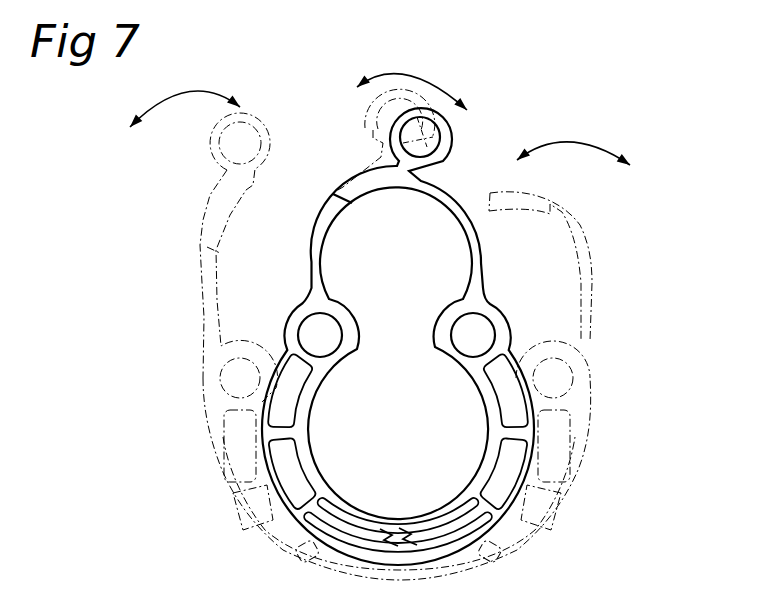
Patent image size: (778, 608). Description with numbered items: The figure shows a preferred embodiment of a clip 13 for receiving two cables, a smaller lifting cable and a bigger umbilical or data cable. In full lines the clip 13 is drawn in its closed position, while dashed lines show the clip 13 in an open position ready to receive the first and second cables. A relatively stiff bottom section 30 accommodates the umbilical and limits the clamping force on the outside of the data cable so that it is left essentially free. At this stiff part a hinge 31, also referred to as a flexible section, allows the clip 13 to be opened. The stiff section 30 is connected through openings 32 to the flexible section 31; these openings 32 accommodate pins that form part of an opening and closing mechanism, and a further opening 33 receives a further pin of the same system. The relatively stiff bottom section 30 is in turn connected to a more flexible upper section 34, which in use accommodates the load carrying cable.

The clip 13 is at (477, 243).
The relatively stiff bottom section 30 is at (547, 442).
The hinge 31 is at (553, 287).
The openings 32 is at (470, 337).
The further opening 33 is at (430, 143).
The more flexible upper section 34 is at (317, 235).